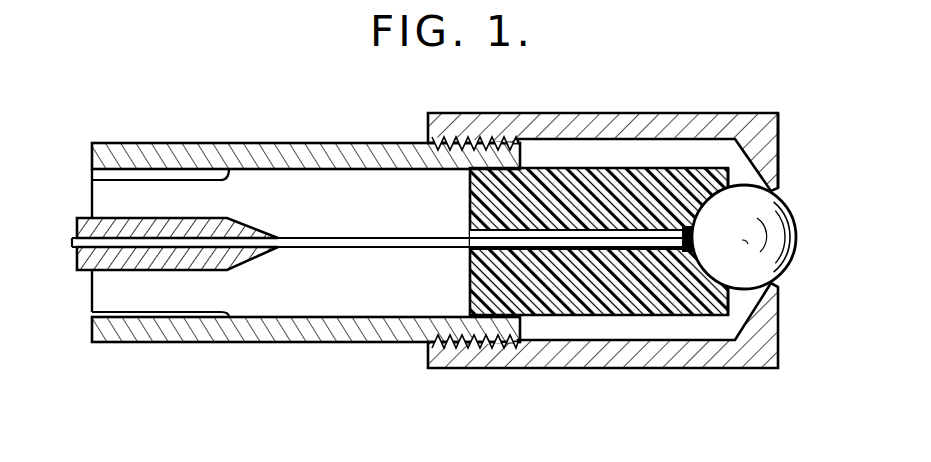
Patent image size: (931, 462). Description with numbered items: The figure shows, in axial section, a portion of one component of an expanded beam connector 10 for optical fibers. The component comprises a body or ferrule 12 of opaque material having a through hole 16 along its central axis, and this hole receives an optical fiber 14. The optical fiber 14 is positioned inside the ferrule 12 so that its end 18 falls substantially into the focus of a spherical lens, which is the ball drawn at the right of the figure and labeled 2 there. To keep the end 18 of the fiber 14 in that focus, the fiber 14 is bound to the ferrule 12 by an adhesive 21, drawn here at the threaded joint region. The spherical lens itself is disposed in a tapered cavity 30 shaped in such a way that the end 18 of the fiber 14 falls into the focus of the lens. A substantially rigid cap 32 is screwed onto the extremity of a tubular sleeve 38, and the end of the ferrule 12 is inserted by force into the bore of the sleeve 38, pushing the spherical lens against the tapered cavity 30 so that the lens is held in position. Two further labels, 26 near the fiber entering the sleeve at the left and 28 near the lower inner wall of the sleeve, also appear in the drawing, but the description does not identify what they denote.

The ball lens 2 is at (787, 269).
The connector 10 is at (670, 110).
The ferrule 12 is at (580, 300).
The optical fiber 14 is at (358, 237).
The through hole 16 is at (606, 231).
The end of the optical fiber 18 is at (701, 190).
The adhesive 21 is at (503, 150).
The fiber jacket 26 is at (107, 262).
The sleeve bore shoulder 28 is at (210, 313).
The tapered cavity 30 is at (681, 297).
The cap 32 is at (752, 113).
The tubular sleeve 38 is at (270, 143).